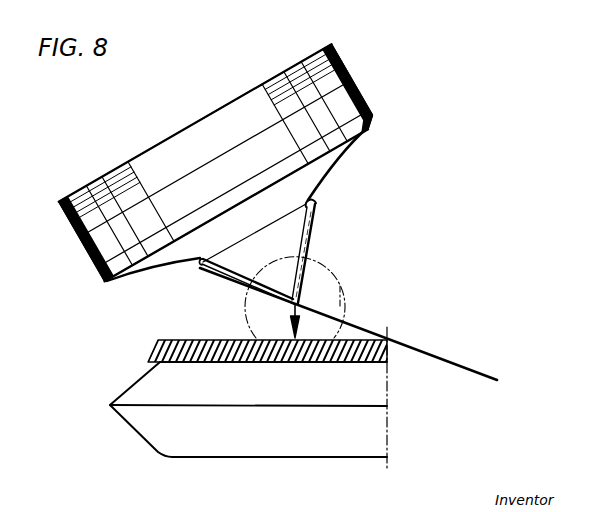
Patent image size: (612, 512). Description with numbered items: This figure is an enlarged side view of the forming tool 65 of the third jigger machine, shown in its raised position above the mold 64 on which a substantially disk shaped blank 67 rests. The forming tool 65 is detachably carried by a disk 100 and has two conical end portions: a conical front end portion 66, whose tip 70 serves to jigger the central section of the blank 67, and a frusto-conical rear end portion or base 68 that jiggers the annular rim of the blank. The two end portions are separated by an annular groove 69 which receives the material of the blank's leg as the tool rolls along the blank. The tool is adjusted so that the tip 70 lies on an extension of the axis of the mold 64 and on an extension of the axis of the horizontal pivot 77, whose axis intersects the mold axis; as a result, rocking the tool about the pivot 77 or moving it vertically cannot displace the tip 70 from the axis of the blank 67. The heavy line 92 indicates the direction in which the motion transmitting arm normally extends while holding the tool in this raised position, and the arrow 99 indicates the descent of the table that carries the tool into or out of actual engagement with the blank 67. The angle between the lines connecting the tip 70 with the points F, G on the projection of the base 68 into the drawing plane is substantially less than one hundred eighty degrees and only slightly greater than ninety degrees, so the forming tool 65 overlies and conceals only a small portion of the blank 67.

The disk 100 is at (325, 68).
The forming tool 65 is at (376, 92).
The point G is at (373, 128).
The annular groove 69 is at (318, 200).
The conical front end portion 66 is at (308, 235).
The tip 70 is at (312, 295).
The horizontal pivot 77 is at (335, 293).
The arrow 99 is at (333, 314).
The heavy line 92 is at (455, 362).
The frusto-conical rear end portion or base 68 is at (180, 250).
The blank 67 is at (173, 338).
The mold 64 is at (126, 393).
The point F is at (110, 283).